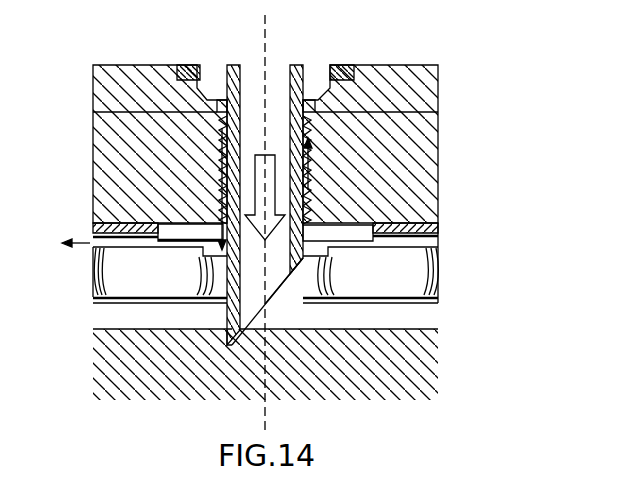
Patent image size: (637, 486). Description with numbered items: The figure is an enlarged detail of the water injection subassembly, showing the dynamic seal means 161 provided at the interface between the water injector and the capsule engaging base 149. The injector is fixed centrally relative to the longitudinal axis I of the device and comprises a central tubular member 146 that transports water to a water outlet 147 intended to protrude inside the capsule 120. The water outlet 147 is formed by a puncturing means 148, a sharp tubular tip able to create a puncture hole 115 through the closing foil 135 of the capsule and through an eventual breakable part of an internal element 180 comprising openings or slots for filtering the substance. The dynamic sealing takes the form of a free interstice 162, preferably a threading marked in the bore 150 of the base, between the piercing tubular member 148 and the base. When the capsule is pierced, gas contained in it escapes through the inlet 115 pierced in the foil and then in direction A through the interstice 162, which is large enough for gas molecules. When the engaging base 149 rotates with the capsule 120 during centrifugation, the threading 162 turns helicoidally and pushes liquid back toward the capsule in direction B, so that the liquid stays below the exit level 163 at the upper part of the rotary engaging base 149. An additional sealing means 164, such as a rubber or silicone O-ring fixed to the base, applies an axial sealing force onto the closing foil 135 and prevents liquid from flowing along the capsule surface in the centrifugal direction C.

The central tubular member 146 is at (303, 72).
The water outlet 147 is at (263, 303).
The puncturing means 148 is at (230, 347).
The capsule engaging base 149 is at (113, 162).
The bore of the base 150 is at (308, 142).
The dynamic seal means 161 is at (314, 195).
The free interstice 162 is at (307, 122).
The exit level 163 is at (212, 100).
The additional sealing means 164 is at (172, 230).
The closing foil 135 is at (436, 236).
The internal element 180 is at (447, 238).
The capsule 120 is at (476, 225).
The puncture hole 115 is at (348, 301).
The longitudinal axis I is at (268, 30).
The gas escape direction A is at (310, 170).
The liquid return direction B is at (220, 183).
The centrifugal direction C is at (67, 243).